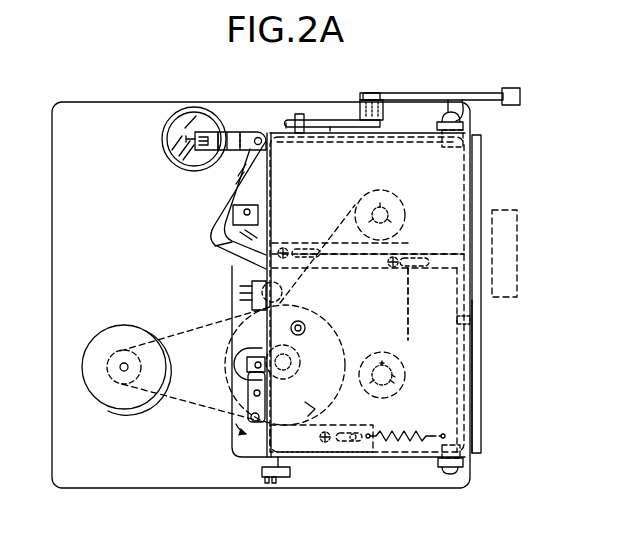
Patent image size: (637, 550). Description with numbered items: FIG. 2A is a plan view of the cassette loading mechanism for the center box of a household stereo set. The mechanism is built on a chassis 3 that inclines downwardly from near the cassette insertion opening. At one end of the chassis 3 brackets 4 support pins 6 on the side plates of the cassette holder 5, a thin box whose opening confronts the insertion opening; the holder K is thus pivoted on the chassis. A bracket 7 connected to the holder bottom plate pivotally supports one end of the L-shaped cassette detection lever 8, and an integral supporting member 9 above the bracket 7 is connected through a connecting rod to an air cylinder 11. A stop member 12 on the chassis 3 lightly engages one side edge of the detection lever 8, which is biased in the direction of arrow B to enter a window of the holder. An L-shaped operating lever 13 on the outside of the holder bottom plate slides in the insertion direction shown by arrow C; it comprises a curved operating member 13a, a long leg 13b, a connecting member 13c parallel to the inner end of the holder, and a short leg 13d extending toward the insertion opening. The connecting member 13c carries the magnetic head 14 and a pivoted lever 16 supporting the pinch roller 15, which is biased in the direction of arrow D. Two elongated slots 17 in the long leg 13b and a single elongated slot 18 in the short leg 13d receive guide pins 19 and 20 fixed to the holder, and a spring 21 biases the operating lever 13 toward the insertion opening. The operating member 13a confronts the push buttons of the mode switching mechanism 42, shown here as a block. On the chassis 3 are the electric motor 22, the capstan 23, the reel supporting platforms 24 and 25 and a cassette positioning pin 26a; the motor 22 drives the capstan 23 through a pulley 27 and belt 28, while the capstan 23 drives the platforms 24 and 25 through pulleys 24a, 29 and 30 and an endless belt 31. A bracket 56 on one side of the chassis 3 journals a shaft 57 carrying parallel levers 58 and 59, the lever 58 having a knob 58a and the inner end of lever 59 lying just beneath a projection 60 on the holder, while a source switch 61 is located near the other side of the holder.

The chassis 3 is at (182, 489).
The brackets 4 is at (468, 126).
The cassette holder 5 is at (483, 167).
The pins 6 is at (449, 110).
The bracket 7 is at (262, 131).
The cassette detection lever 8 is at (213, 229).
The supporting member 9 is at (206, 131).
The air cylinder 11 is at (180, 111).
The stop member 12 is at (220, 246).
The operating lever 13 is at (421, 273).
The operating member 13a is at (466, 322).
The long leg 13b is at (375, 272).
The connecting member 13c is at (242, 348).
The short leg 13d is at (344, 442).
The magnetic head 14 is at (252, 286).
The pinch roller 15 is at (247, 366).
The pivoted lever 16 is at (250, 403).
The elongated slots 17 is at (305, 252).
The elongated slot 18 is at (355, 442).
The guide pins 19 is at (284, 247).
The guide pin 20 is at (323, 442).
The spring 21 is at (400, 440).
The electric motor 22 is at (90, 371).
The capstan 23 is at (293, 353).
The reel supporting platform 24 is at (392, 384).
The pulley 24a is at (380, 359).
The reel supporting platform 25 is at (386, 209).
The cassette positioning pin 26a is at (303, 322).
The pulley 27 is at (313, 409).
The belt 28 is at (182, 318).
The pulley 29 is at (404, 378).
The pulley 30 is at (373, 195).
The endless belt 31 is at (410, 333).
The mode switching mechanism 42 is at (516, 238).
The bracket 56 is at (386, 84).
The shaft 57 is at (383, 99).
The lever 58 is at (460, 93).
The knob 58a is at (518, 95).
The lever 59 is at (326, 119).
The projection 60 is at (299, 113).
The source switch 61 is at (262, 478).
The arrow B is at (250, 127).
The arrow C is at (536, 296).
The arrow D is at (252, 447).
The cassette holder K is at (481, 411).